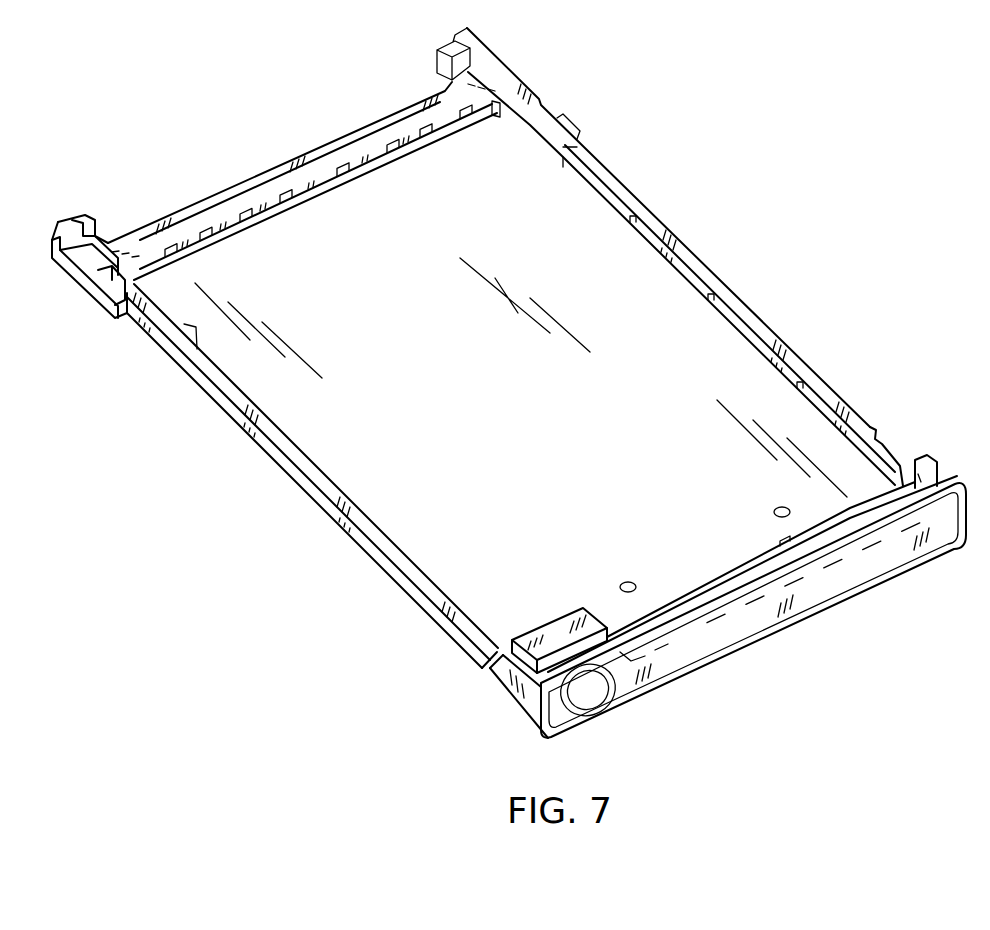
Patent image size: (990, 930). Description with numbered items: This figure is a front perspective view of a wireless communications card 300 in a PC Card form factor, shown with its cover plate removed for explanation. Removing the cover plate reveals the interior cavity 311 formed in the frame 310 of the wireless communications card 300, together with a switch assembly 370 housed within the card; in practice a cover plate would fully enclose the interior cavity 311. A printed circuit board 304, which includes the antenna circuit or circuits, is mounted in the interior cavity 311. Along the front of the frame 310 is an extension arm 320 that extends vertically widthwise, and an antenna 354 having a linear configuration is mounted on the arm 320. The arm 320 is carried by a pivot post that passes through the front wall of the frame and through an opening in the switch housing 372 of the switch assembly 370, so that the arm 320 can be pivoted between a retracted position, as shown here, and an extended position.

The wireless communications card 300 is at (774, 89).
The printed circuit board 304 is at (541, 388).
The frame 310 is at (770, 327).
The interior cavity 311 is at (572, 217).
The extension arm 320 is at (850, 577).
The antenna 354 is at (718, 662).
The switch assembly 370 is at (540, 607).
The switch housing 372 is at (513, 653).